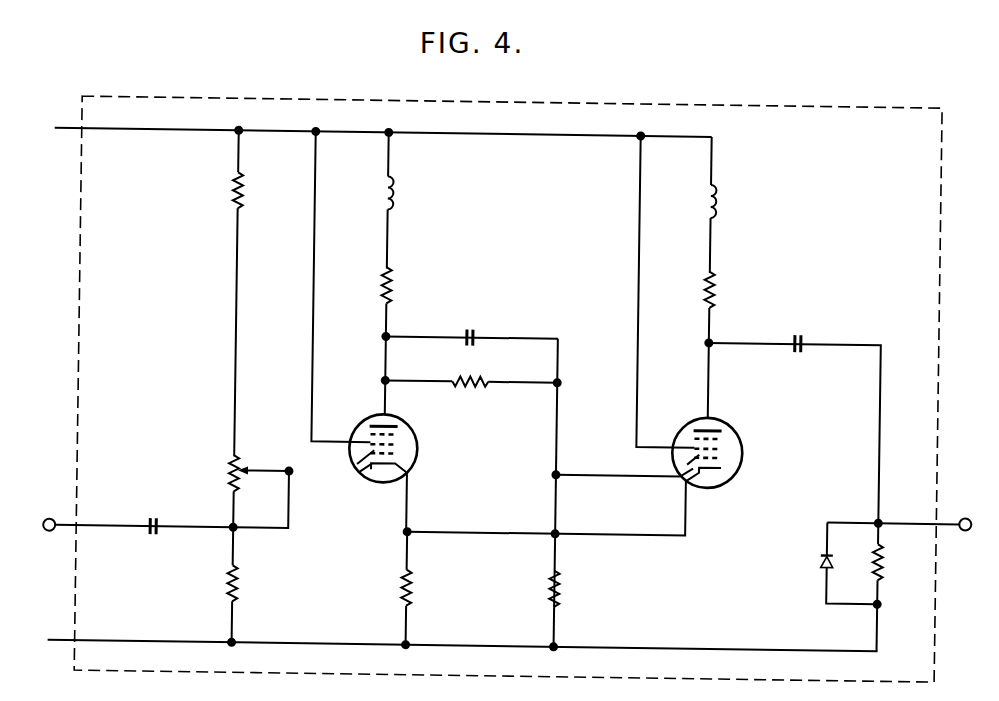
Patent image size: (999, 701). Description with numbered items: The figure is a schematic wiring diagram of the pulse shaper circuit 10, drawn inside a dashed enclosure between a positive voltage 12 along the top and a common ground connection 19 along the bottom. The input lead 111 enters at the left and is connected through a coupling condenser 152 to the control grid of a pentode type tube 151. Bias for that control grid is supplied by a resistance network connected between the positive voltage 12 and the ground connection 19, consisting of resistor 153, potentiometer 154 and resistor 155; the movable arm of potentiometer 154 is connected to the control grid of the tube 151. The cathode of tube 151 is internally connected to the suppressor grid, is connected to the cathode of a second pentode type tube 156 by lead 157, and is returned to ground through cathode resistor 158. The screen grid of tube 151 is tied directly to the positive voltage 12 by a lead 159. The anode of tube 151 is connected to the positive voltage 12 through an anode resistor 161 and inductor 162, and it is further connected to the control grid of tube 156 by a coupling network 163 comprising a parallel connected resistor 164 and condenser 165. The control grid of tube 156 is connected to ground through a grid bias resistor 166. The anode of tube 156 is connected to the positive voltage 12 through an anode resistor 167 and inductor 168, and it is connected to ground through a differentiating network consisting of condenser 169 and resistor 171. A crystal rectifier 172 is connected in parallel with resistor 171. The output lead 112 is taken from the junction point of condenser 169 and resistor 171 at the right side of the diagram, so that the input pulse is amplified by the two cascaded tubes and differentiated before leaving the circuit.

The pulse shaper circuit 10 is at (205, 102).
The positive voltage 12 is at (58, 134).
The common ground connection 19 is at (62, 646).
The input lead 111 is at (66, 526).
The output lead 112 is at (956, 519).
The pentode type tube 151 is at (410, 430).
The coupling condenser 152 is at (159, 524).
The resistor 153 is at (233, 195).
The potentiometer 154 is at (232, 480).
The resistor 155 is at (232, 592).
The pentode type tube 156 is at (732, 436).
The lead 157 is at (629, 535).
The cathode resistor 158 is at (405, 593).
The lead 159 is at (313, 357).
The anode resistor 161 is at (391, 287).
The inductor 162 is at (391, 196).
The coupling network 163 is at (552, 356).
The resistor 164 is at (470, 385).
The condenser 165 is at (474, 340).
The grid bias resistor 166 is at (562, 587).
The anode resistor 167 is at (714, 289).
The inductor 168 is at (714, 202).
The condenser 169 is at (801, 338).
The resistor 171 is at (885, 561).
The crystal rectifier 172 is at (822, 557).